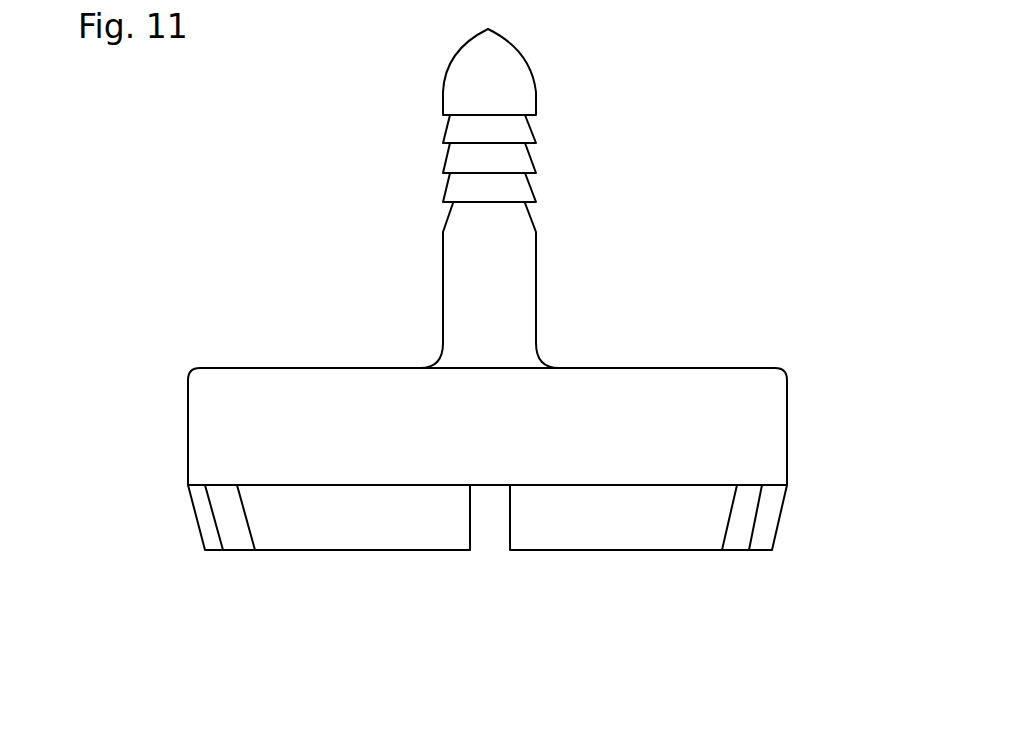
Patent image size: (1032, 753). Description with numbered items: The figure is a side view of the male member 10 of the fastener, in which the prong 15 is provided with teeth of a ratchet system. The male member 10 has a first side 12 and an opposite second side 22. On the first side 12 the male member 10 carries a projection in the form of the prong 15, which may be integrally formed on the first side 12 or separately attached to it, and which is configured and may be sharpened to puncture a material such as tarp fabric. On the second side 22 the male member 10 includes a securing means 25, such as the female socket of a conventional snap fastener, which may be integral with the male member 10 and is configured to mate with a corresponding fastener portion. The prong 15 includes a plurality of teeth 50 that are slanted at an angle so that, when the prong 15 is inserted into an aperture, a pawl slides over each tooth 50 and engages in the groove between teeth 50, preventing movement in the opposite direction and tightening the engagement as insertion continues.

The male member 10 is at (763, 223).
The first side 12 is at (645, 368).
The prong 15 is at (482, 253).
The second side 22 is at (802, 562).
The securing means 25 is at (558, 550).
The teeth 50 is at (532, 197).